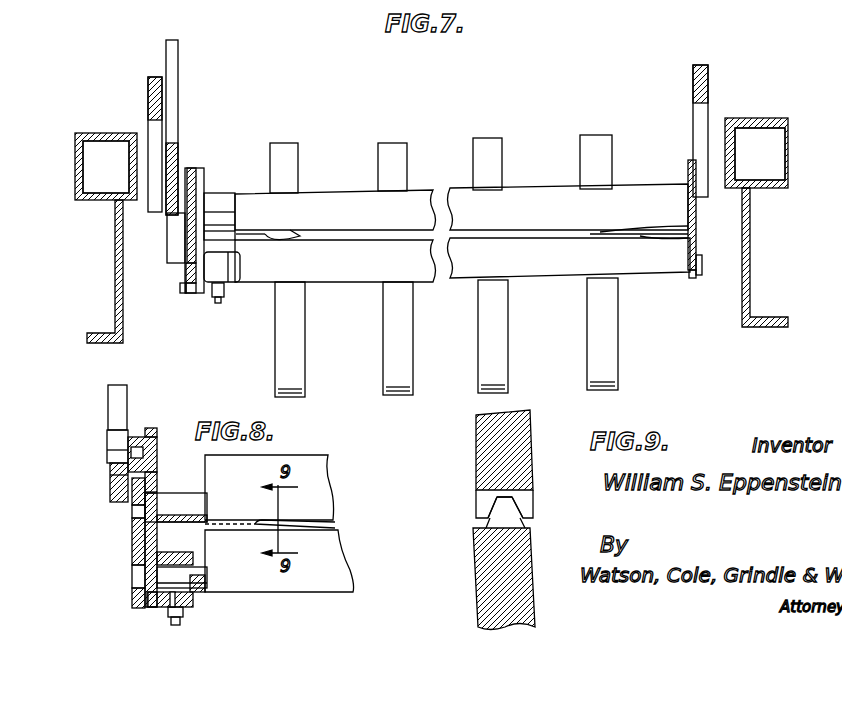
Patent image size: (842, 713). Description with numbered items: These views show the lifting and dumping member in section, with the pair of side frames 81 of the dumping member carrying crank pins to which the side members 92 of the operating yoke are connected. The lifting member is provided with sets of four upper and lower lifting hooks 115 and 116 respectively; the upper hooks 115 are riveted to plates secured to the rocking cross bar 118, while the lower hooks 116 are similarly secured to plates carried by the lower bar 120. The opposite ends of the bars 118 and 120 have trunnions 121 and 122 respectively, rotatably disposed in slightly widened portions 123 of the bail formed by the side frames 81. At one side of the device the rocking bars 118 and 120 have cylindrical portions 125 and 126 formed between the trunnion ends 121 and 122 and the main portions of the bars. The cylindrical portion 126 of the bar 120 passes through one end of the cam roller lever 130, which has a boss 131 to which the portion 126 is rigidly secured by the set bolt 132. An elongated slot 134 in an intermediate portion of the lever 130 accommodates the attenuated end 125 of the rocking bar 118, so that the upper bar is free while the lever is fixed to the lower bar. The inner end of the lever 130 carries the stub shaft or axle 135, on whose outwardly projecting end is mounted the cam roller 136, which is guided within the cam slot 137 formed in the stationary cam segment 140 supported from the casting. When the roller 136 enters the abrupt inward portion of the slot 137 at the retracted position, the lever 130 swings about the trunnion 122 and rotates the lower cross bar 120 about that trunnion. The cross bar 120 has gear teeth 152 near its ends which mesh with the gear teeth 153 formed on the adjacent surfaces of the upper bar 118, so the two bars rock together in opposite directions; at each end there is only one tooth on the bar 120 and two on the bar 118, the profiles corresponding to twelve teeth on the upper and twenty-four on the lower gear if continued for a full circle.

In FIG. 7, the side frame 81 is at (175, 232).
In FIG. 8, the side frame 81 is at (135, 552).
In FIG. 7, the yoke side member 92 is at (150, 82).
In FIG. 7, the upper lifting hook 115 is at (384, 163).
In FIG. 7, the lower lifting hook 116 is at (395, 335).
In FIG. 7, the upper rocking cross bar 118 is at (433, 192).
In FIG. 9, the upper rocking cross bar 118 is at (476, 472).
In FIG. 7, the lower rocking cross bar 120 is at (447, 268).
In FIG. 9, the lower rocking cross bar 120 is at (485, 560).
In FIG. 7, the trunnion 121 is at (680, 210).
In FIG. 8, the trunnion 121 is at (134, 511).
In FIG. 7, the trunnion 122 is at (180, 288).
In FIG. 8, the trunnion 122 is at (134, 583).
In FIG. 7, the widened portion of bail 123 is at (198, 298).
In FIG. 8, the widened portion of bail 123 is at (128, 490).
In FIG. 7, the cylindrical portion 125 is at (223, 195).
In FIG. 8, the cylindrical portion 125 is at (185, 500).
In FIG. 9, the cylindrical portion 125 is at (478, 437).
In FIG. 7, the cylindrical portion 126 is at (242, 266).
In FIG. 8, the cylindrical portion 126 is at (200, 577).
In FIG. 9, the cylindrical portion 126 is at (525, 606).
In FIG. 7, the cam roller lever 130 is at (205, 170).
In FIG. 8, the cam roller lever 130 is at (158, 538).
In FIG. 7, the boss 131 is at (188, 272).
In FIG. 8, the boss 131 is at (160, 608).
In FIG. 7, the set bolt 132 is at (222, 298).
In FIG. 8, the set bolt 132 is at (186, 612).
In FIG. 8, the elongated slot 134 is at (157, 458).
In FIG. 8, the stub shaft 135 is at (140, 438).
In FIG. 8, the cam roller 136 is at (107, 438).
In FIG. 8, the cam slot 137 is at (112, 420).
In FIG. 7, the cam segment 140 is at (178, 90).
In FIG. 7, the gear teeth 152 is at (292, 240).
In FIG. 9, the gear teeth 152 is at (520, 516).
In FIG. 7, the gear teeth 153 is at (258, 238).
In FIG. 9, the gear teeth 153 is at (482, 512).